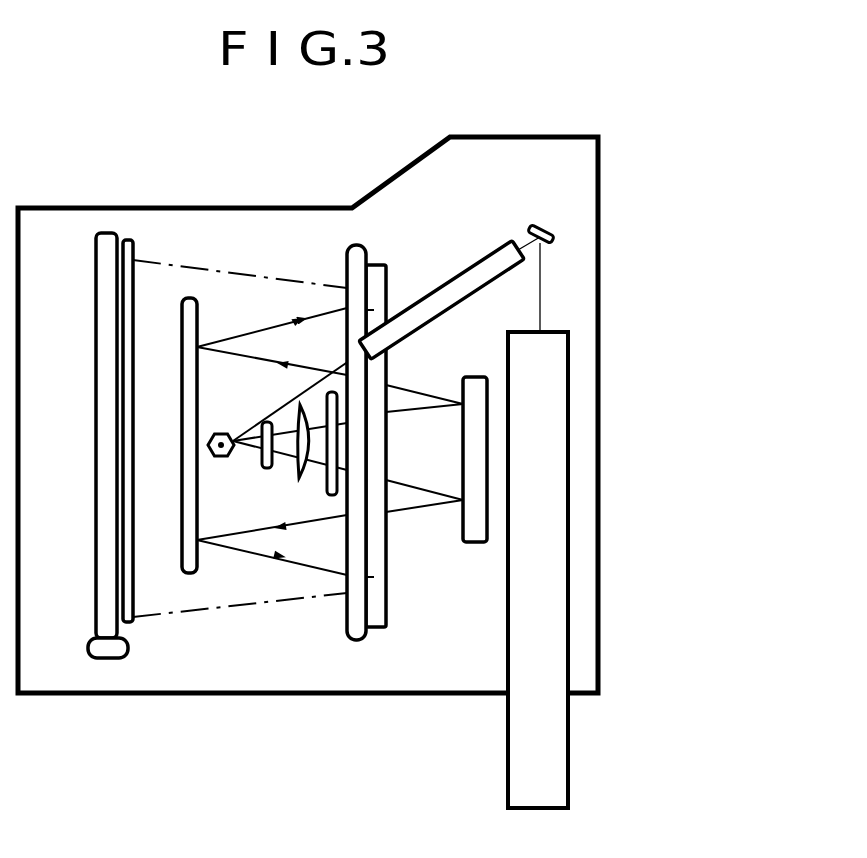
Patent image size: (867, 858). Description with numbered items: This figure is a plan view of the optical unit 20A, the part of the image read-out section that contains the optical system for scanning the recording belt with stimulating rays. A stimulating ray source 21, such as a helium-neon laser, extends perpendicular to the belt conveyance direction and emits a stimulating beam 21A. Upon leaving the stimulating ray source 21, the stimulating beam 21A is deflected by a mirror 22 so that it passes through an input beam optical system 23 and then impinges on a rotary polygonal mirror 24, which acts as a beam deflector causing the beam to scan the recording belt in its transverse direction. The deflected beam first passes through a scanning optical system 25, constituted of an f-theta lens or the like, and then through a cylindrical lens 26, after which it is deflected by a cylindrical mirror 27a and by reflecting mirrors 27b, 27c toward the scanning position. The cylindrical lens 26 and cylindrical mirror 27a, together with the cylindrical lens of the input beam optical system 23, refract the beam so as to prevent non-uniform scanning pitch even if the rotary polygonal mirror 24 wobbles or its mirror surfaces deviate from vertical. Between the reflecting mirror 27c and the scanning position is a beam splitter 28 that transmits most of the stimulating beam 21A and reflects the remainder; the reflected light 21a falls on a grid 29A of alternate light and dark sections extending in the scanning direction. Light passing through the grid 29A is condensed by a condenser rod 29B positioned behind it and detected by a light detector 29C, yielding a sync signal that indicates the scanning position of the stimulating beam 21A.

The optical unit 20A is at (598, 200).
The stimulating ray source 21 is at (568, 483).
The stimulating beam 21A is at (540, 292).
The light reflected by the beam splitter 21a is at (243, 607).
The mirror 22 is at (536, 224).
The input beam optical system 23 is at (437, 287).
The rotary polygonal mirror 24 is at (220, 432).
The scanning optical system 25 is at (300, 483).
The cylindrical lens 26 is at (327, 478).
The cylindrical mirror 27a is at (473, 560).
The reflecting mirror 27b is at (190, 505).
The reflecting mirror 27c is at (386, 627).
The beam splitter 28 is at (357, 645).
The grid 29A is at (133, 622).
The condenser rod 29B is at (100, 558).
The light detector 29C is at (108, 660).